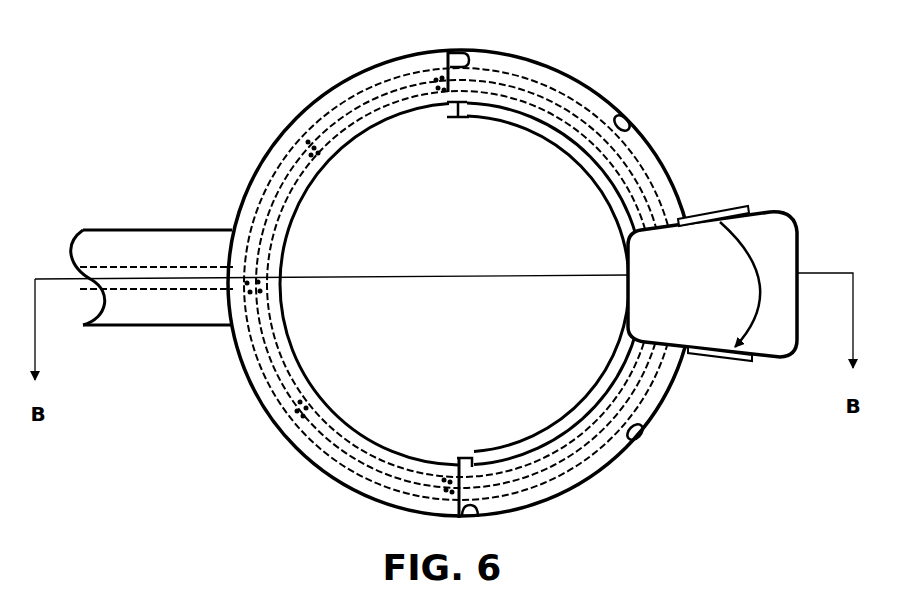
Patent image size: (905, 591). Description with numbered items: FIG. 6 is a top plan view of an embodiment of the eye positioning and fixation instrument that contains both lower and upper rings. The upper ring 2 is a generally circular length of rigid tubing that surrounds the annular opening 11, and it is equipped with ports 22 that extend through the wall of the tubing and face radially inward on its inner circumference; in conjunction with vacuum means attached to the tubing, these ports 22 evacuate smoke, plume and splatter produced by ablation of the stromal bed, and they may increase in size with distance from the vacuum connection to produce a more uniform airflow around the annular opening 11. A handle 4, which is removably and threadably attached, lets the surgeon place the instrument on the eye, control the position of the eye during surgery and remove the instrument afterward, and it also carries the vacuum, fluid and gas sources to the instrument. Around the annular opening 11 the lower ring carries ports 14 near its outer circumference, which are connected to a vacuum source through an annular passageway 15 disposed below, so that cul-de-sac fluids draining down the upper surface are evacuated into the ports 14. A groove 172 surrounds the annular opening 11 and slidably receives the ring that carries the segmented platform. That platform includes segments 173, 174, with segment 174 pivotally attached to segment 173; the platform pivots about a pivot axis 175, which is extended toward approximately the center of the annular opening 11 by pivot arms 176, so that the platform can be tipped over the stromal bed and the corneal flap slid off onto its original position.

The upper ring 2 is at (283, 128).
The handle 4 is at (162, 230).
The annular opening 11 is at (470, 248).
The ports 14 is at (457, 55).
The annular passageway 15 is at (578, 78).
The ports 22 is at (449, 483).
The groove 172 is at (563, 450).
The segment 173 is at (748, 210).
The segment 174 is at (797, 232).
The pivot axis 175 is at (477, 468).
The pivot arms 176 is at (615, 388).